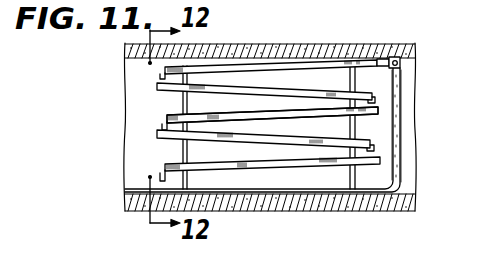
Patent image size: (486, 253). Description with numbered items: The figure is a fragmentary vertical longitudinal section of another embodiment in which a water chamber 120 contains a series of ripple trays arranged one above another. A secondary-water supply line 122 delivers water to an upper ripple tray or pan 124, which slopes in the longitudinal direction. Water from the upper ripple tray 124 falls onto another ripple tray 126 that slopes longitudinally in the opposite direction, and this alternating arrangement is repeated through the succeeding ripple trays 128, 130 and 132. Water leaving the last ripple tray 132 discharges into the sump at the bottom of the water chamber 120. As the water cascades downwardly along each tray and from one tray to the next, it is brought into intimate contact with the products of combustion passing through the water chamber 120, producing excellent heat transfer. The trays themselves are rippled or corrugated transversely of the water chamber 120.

The water chamber 120 is at (248, 60).
The secondary-water supply line 122 is at (400, 131).
The upper ripple tray 124 is at (273, 68).
The ripple tray 126 is at (235, 93).
The ripple tray 128 is at (283, 115).
The ripple tray 130 is at (206, 143).
The last ripple tray 132 is at (305, 166).